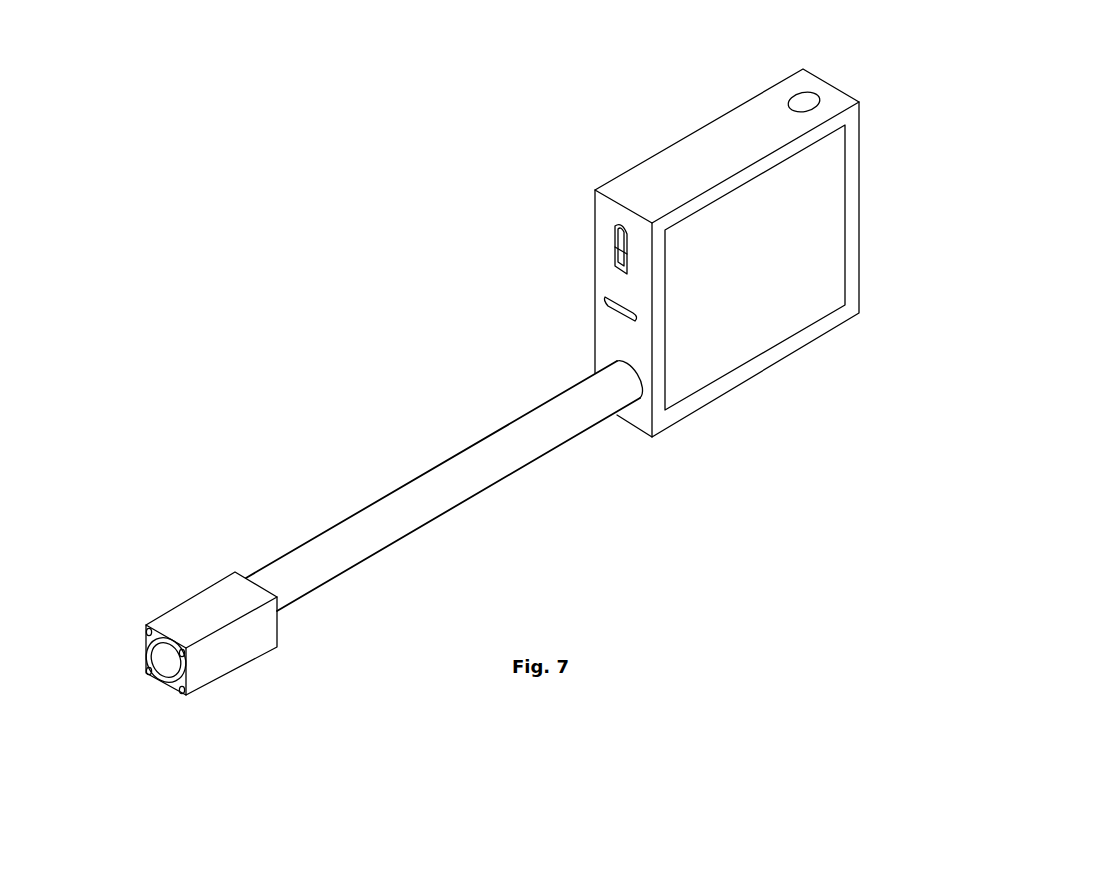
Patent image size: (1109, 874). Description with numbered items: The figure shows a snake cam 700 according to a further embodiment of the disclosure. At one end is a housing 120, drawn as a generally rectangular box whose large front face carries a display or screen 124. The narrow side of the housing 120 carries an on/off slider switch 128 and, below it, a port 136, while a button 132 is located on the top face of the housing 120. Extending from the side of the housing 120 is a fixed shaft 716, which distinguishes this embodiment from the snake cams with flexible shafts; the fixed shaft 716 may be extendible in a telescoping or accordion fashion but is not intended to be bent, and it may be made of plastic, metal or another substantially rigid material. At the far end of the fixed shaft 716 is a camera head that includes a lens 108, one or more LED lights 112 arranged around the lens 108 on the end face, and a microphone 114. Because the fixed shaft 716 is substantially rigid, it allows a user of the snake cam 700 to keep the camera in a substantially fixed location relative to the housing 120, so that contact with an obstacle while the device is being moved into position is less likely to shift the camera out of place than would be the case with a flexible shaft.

The snake cam 700 is at (376, 195).
The housing 120 is at (827, 82).
The display or screen 124 is at (828, 232).
The button 132 is at (788, 101).
The on/off slider switch 128 is at (615, 232).
The port 136 is at (608, 305).
The fixed shaft 716 is at (415, 482).
The microphone 114 is at (145, 628).
The lens 108 is at (162, 656).
The LED lights 112 is at (146, 673).